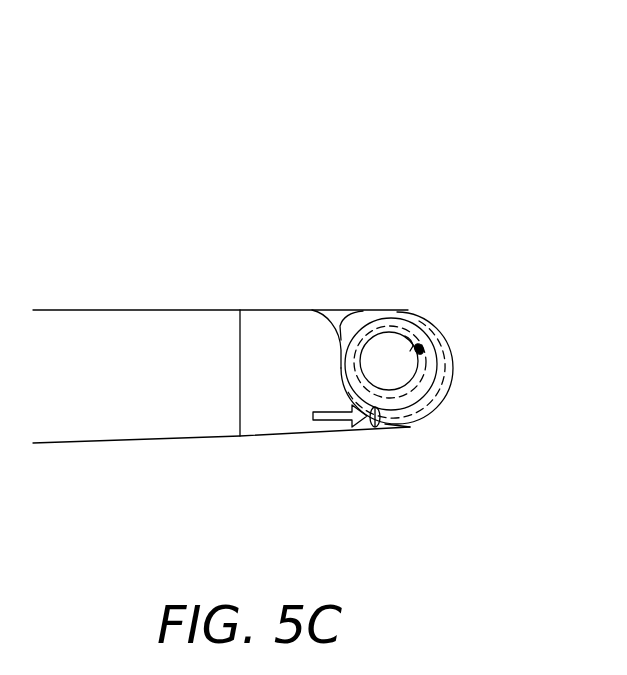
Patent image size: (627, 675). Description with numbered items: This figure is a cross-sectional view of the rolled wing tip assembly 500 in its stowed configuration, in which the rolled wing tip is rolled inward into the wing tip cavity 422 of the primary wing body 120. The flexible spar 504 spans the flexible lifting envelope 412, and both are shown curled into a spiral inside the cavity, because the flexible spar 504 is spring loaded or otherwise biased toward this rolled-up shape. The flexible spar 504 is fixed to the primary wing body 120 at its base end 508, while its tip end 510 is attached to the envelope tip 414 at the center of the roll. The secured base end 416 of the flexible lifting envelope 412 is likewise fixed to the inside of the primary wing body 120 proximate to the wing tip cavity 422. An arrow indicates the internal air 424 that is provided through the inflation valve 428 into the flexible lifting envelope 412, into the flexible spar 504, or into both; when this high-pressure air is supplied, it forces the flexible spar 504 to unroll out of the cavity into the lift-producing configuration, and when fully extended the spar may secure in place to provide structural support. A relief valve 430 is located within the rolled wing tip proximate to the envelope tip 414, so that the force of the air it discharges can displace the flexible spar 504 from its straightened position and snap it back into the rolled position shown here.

The rolled wing tip assembly 500 is at (222, 122).
The primary wing body 120 is at (77, 323).
The secured base end 416 is at (313, 313).
The wing tip cavity 422 is at (347, 318).
The envelope tip 414 is at (415, 343).
The tip end 510 is at (419, 345).
The relief valve 430 is at (421, 347).
The flexible lifting envelope 412 is at (447, 372).
The flexible spar 504 is at (440, 397).
The base end 508 is at (383, 421).
The inflation valve 428 is at (383, 425).
The internal air 424 is at (317, 417).